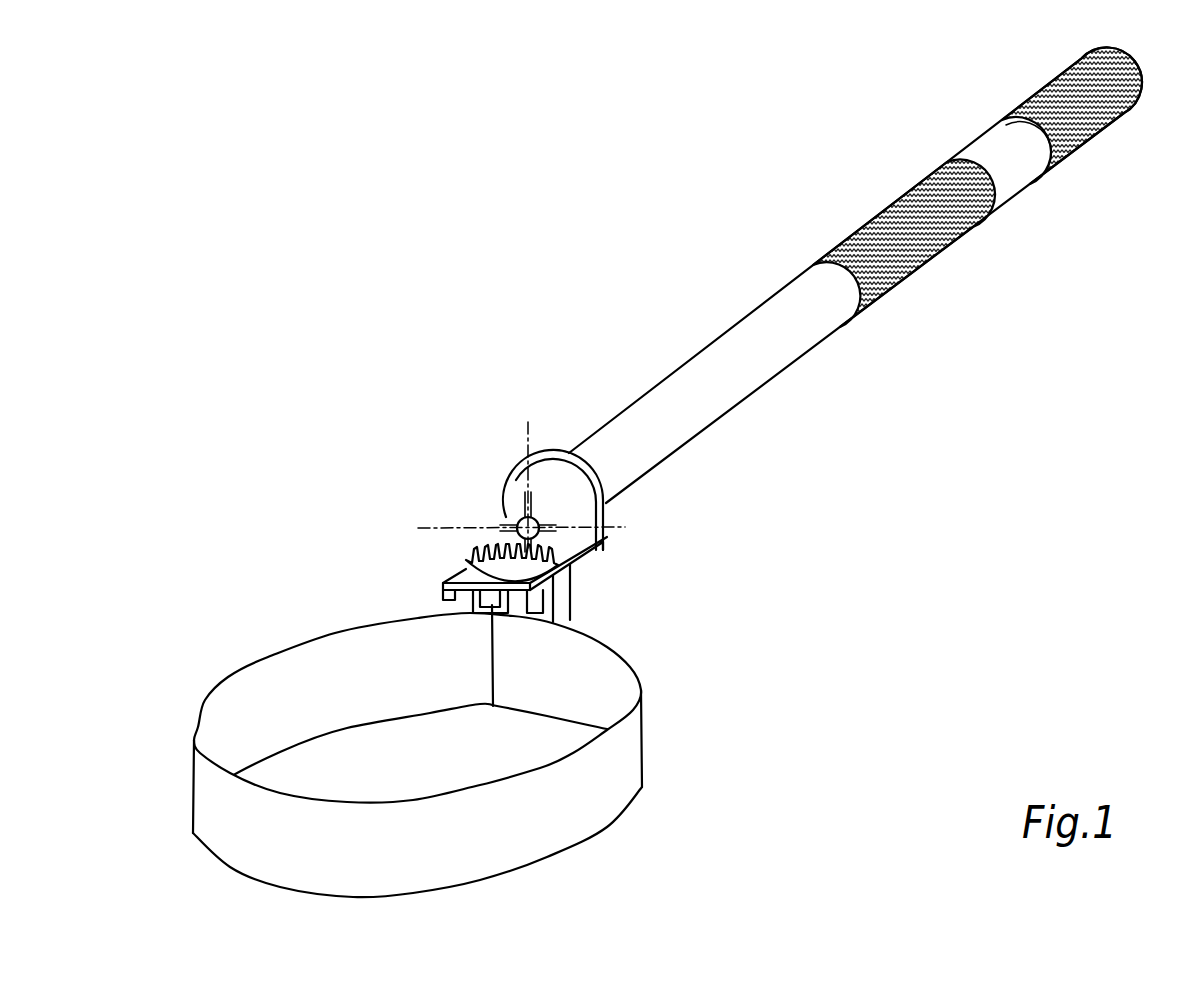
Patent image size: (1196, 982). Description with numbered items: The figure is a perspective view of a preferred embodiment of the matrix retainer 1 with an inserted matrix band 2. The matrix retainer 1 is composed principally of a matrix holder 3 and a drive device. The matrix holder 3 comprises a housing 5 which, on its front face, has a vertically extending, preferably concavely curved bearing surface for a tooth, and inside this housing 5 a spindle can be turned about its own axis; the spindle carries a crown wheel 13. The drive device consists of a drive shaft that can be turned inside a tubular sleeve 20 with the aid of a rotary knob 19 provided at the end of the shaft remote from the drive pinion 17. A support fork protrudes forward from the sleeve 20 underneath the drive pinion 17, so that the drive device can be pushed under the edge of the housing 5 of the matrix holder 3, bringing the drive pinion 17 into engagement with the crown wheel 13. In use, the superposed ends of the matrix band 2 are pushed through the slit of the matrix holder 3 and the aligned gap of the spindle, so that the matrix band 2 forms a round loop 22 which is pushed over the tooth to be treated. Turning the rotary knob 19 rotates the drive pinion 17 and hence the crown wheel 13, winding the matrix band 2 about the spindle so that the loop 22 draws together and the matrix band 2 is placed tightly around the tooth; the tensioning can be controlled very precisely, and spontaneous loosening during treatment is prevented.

The matrix retainer 1 is at (518, 262).
The matrix band 2 is at (618, 752).
The matrix holder 3 is at (422, 588).
The housing 5 is at (567, 597).
The crown wheel 13 is at (467, 573).
The drive pinion 17 is at (507, 505).
The rotary knob 19 is at (1125, 118).
The tubular sleeve 20 is at (750, 333).
The loop 22 is at (432, 772).